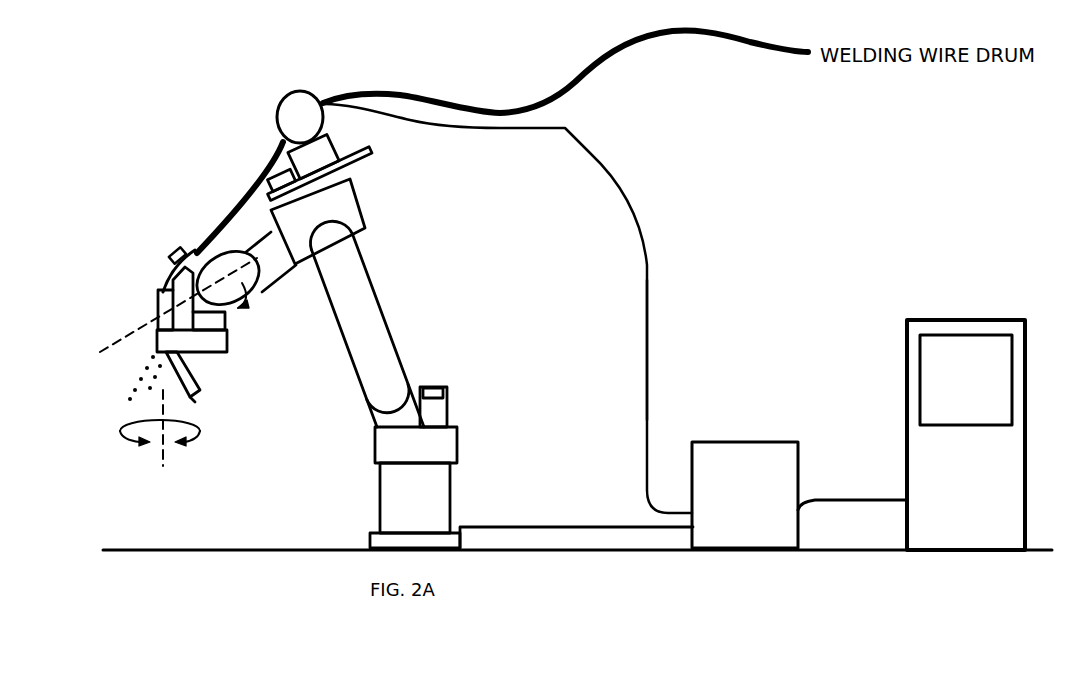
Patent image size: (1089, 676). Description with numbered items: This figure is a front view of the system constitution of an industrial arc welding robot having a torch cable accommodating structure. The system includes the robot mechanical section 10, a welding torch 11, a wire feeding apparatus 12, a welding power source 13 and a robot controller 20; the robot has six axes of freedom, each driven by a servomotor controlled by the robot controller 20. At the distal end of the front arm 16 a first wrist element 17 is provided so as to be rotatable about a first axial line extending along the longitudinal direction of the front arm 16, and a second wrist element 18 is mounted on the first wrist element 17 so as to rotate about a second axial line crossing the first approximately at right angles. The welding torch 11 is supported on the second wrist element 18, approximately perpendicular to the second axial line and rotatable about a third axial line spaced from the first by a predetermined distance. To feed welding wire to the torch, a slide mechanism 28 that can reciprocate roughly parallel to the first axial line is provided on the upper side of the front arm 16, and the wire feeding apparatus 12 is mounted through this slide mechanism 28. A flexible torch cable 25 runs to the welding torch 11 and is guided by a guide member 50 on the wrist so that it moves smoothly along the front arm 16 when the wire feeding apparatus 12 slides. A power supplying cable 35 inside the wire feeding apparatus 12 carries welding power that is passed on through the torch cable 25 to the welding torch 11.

The robot mechanical section 10 is at (375, 267).
The welding torch 11 is at (149, 297).
The wire feeding apparatus 12 is at (267, 104).
The welding power source 13 is at (772, 445).
The front arm 16 is at (336, 204).
The first wrist element 17 is at (225, 299).
The second wrist element 18 is at (209, 365).
The robot controller 20 is at (1026, 362).
The torch cable 25 is at (189, 245).
The slide mechanism 28 is at (349, 131).
The power supplying cable 35 is at (661, 298).
The guide member 50 is at (156, 247).